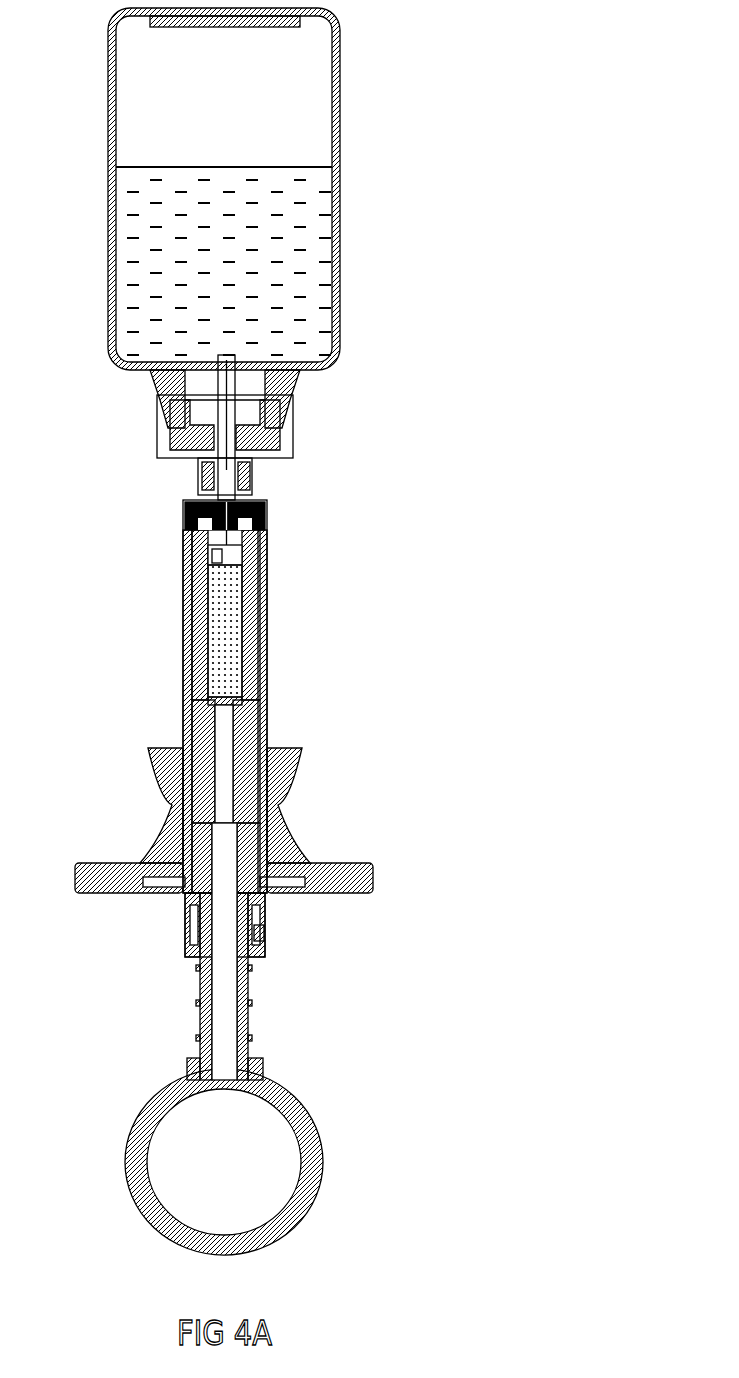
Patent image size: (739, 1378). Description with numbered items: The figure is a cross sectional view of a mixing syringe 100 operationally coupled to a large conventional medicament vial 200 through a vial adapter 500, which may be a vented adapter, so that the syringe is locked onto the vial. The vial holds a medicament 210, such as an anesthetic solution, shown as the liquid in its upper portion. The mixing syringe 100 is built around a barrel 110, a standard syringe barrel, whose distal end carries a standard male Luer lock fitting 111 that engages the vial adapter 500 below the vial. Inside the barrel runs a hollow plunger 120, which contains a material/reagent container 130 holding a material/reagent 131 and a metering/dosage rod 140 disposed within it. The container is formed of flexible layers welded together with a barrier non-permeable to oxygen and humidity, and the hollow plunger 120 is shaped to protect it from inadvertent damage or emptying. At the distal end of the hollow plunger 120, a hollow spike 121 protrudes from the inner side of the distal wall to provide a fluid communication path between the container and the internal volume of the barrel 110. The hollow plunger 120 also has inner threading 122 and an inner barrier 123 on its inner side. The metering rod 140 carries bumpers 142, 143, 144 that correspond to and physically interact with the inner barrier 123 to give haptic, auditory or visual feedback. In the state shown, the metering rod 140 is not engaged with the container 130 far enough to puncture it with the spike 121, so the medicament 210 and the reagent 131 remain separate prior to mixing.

The mixing syringe 100 is at (478, 566).
The barrel 110 is at (265, 512).
The male Luer lock fitting 111 is at (197, 480).
The hollow plunger 120 is at (265, 920).
The spike 121 is at (203, 547).
The inner threading 122 is at (250, 738).
The inner barrier 123 is at (262, 935).
The material/reagent container 130 is at (217, 558).
The material/reagent 131 is at (235, 622).
The metering/dosage rod 140 is at (225, 1018).
The bumper 142 is at (197, 968).
The bumper 143 is at (197, 1003).
The bumper 144 is at (197, 1038).
The medicament vial 200 is at (338, 45).
The medicament 210 is at (305, 228).
The vial adapter 500 is at (298, 428).